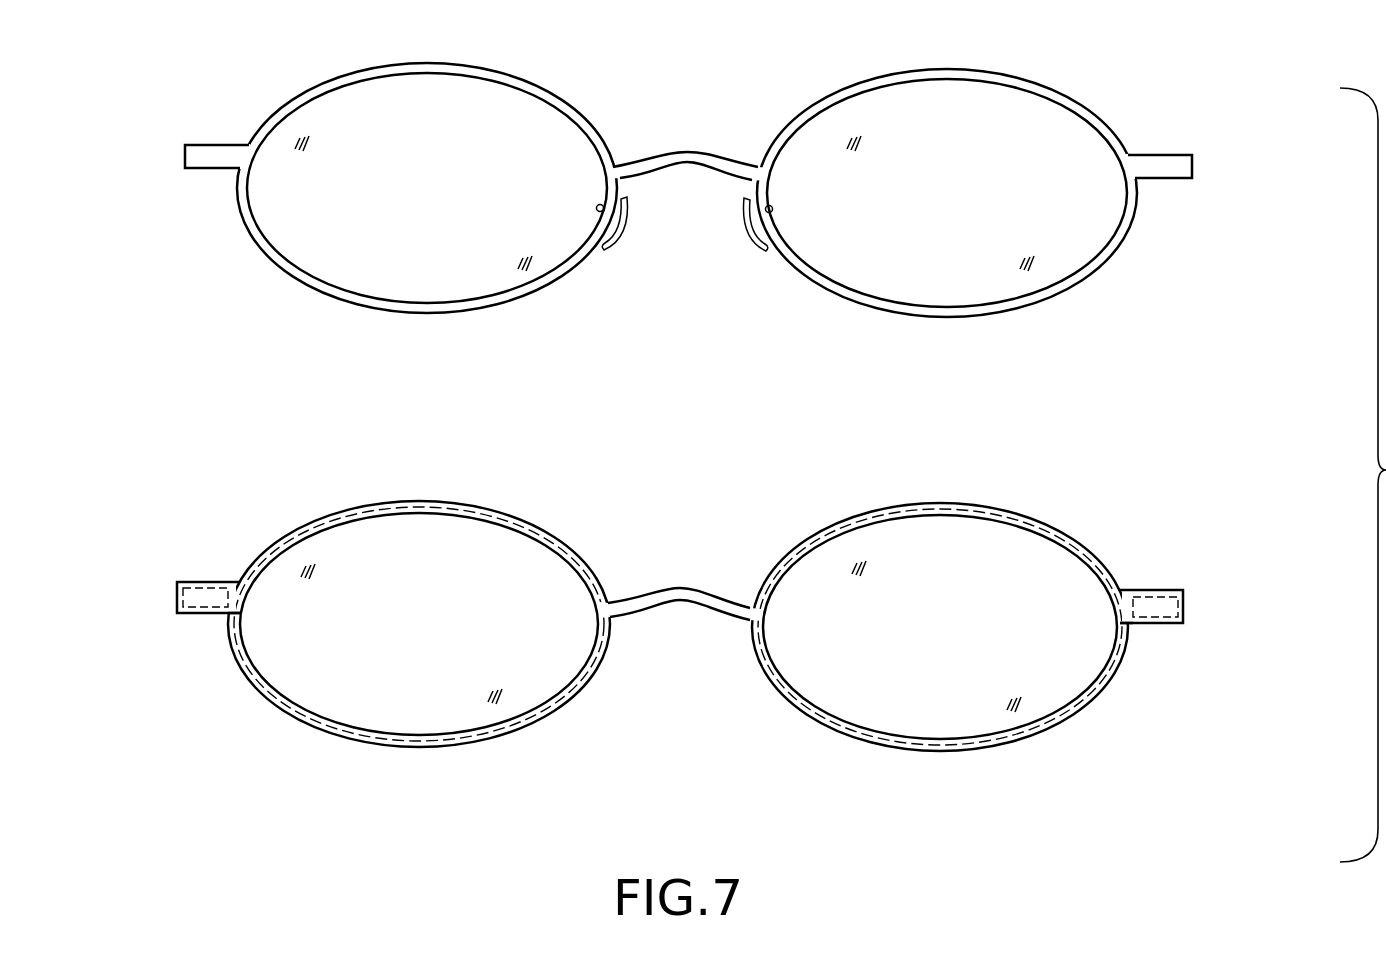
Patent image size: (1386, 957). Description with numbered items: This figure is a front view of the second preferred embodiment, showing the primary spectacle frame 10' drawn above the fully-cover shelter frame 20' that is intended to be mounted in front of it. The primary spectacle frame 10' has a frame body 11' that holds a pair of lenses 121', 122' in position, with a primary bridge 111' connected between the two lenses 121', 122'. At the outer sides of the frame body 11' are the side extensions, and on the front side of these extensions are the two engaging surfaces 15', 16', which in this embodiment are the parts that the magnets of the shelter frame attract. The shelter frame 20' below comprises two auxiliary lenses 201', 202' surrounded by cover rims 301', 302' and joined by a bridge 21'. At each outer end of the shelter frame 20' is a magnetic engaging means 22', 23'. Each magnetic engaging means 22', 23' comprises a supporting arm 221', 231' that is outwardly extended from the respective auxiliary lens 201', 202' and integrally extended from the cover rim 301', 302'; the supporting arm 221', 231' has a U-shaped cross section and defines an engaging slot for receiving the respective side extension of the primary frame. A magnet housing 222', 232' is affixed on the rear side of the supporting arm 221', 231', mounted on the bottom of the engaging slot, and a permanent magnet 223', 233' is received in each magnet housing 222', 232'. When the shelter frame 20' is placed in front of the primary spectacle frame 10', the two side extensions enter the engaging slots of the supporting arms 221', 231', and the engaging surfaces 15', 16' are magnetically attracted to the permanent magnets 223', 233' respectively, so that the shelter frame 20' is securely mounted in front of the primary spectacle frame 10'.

The primary spectacle frame 10' is at (656, 222).
The frame body 11' is at (993, 199).
The primary bridge 111' is at (687, 215).
The lens 121' is at (961, 233).
The lens 122' is at (427, 212).
The engaging surface 15' is at (1159, 118).
The engaging surface 16' is at (220, 113).
The fully-cover shelter frame 20' is at (708, 664).
The bridge 21' is at (681, 661).
The magnetic engaging means 22' is at (1225, 698).
The supporting arm 221' is at (1194, 671).
The magnet housing 222' is at (1160, 547).
The permanent magnet 223' is at (1225, 606).
The magnetic engaging means 23' is at (175, 660).
The supporting arm 231' is at (162, 653).
The magnet housing 232' is at (224, 548).
The permanent magnet 233' is at (167, 560).
The auxiliary lens 201' is at (940, 685).
The auxiliary lens 202' is at (434, 656).
The cover rim 301' is at (940, 589).
The cover rim 302' is at (419, 578).